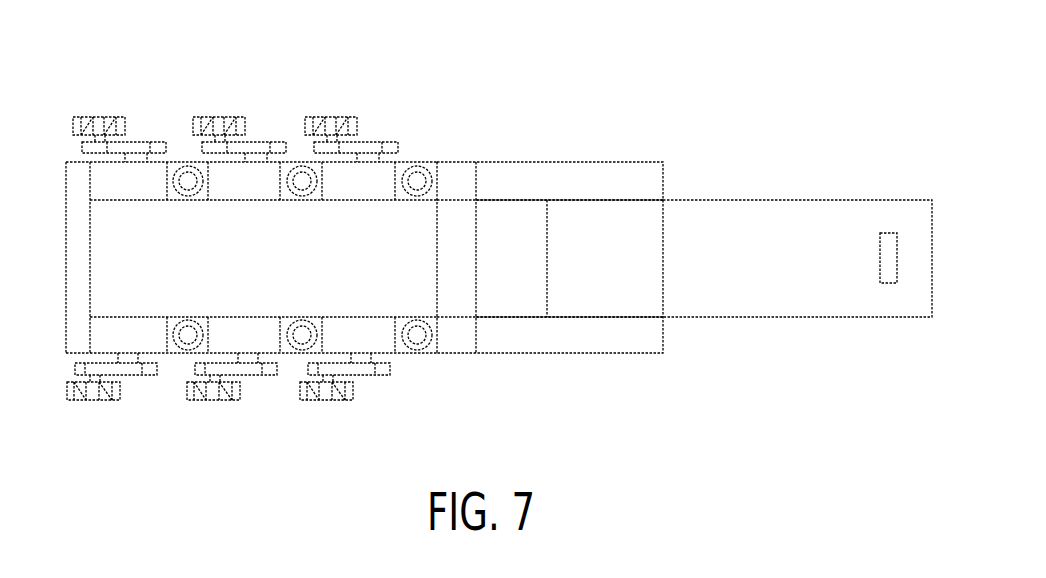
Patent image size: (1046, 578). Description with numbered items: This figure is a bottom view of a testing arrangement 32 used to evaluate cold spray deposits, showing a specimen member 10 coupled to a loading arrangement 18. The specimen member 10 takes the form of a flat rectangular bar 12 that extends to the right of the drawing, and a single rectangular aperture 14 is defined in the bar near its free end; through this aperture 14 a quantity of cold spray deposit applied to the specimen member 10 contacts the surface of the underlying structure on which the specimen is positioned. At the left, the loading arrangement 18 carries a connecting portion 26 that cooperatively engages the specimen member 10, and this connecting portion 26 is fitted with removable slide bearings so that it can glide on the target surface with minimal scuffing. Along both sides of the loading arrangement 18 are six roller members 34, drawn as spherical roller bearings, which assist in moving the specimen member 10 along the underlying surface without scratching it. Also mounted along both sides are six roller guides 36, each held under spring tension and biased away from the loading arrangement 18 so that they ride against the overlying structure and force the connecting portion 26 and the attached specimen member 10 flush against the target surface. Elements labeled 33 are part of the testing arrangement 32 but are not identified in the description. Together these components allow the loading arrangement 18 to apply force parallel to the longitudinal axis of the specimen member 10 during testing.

The specimen member 10 is at (818, 182).
The rectangular bar 12 is at (712, 213).
The aperture 14 is at (889, 226).
The loading arrangement 18 is at (423, 136).
The connecting portion 26 is at (517, 163).
The testing arrangement 32 is at (621, 107).
The guide rail 33 is at (653, 177).
The roller member 34 is at (185, 197).
The roller guide 36 is at (100, 106).